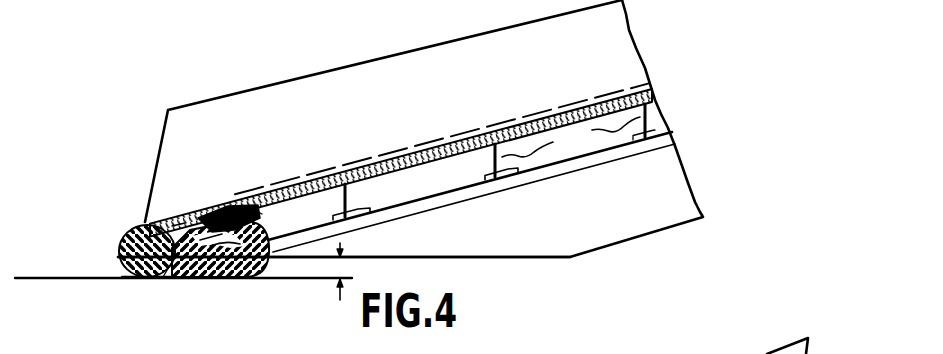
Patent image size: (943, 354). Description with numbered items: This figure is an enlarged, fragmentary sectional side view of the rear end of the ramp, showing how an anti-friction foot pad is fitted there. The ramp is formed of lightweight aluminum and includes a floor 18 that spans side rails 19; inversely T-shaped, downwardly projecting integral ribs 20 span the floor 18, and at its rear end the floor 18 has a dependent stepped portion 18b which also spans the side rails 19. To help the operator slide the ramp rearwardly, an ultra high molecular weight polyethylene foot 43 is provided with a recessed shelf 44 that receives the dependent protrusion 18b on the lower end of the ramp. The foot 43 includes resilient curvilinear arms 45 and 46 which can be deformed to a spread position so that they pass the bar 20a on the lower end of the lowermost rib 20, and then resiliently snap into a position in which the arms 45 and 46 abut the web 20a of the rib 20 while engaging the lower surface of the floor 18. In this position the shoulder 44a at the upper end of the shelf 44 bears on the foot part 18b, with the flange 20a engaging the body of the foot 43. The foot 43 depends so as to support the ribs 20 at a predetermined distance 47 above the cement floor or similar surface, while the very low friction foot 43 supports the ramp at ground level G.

The side rails 19 is at (369, 64).
The floor 18 is at (463, 158).
The dependent stepped portion 18b is at (120, 237).
The ribs 20 is at (471, 184).
The bar 20a is at (198, 218).
The foot 43 is at (233, 268).
The recessed shelf 44 is at (130, 280).
The shoulder 44a is at (163, 280).
The resilient curvilinear arm 45 is at (182, 221).
The resilient curvilinear arm 46 is at (257, 227).
The predetermined distance 47 is at (348, 266).
The ground level G is at (62, 281).